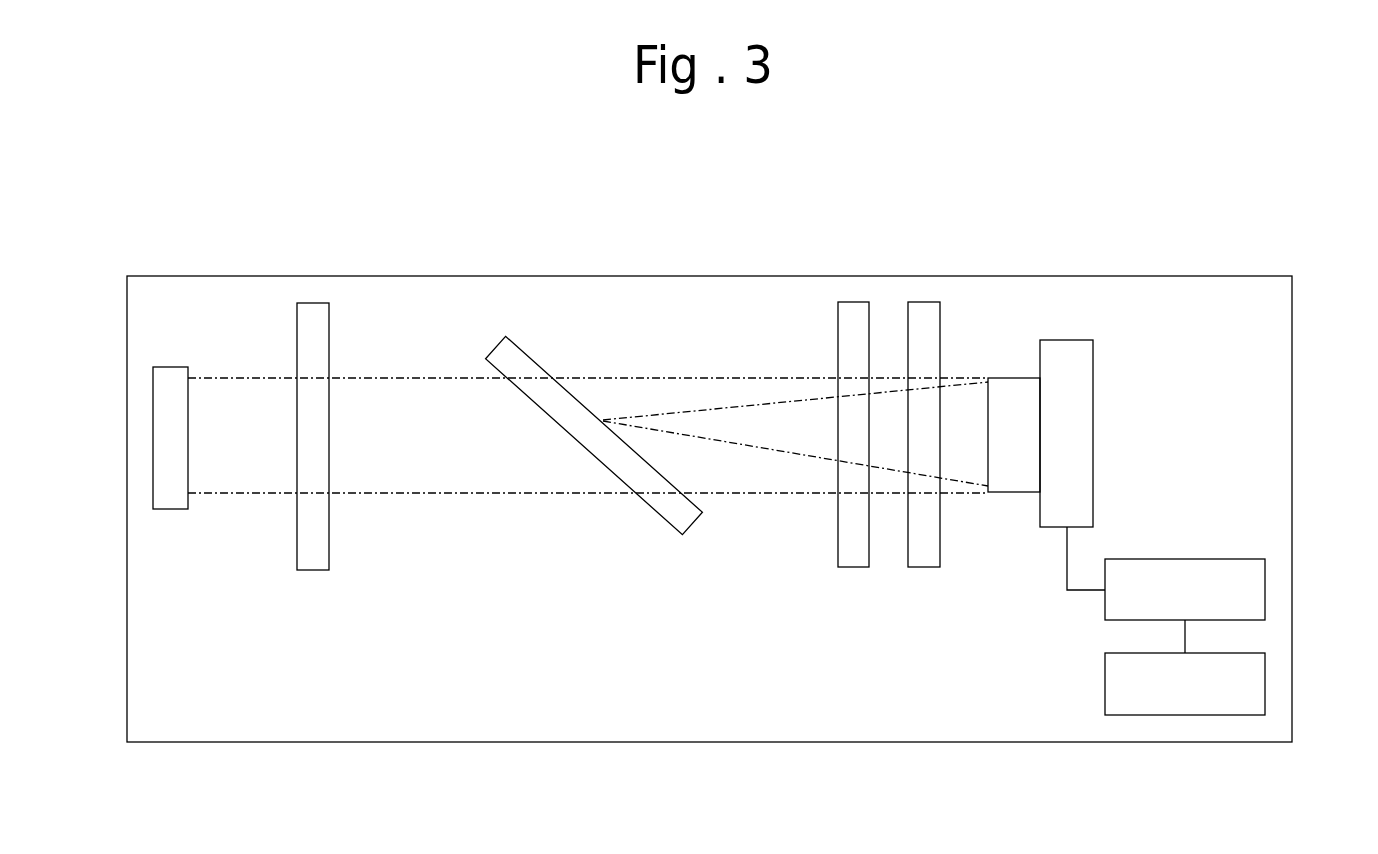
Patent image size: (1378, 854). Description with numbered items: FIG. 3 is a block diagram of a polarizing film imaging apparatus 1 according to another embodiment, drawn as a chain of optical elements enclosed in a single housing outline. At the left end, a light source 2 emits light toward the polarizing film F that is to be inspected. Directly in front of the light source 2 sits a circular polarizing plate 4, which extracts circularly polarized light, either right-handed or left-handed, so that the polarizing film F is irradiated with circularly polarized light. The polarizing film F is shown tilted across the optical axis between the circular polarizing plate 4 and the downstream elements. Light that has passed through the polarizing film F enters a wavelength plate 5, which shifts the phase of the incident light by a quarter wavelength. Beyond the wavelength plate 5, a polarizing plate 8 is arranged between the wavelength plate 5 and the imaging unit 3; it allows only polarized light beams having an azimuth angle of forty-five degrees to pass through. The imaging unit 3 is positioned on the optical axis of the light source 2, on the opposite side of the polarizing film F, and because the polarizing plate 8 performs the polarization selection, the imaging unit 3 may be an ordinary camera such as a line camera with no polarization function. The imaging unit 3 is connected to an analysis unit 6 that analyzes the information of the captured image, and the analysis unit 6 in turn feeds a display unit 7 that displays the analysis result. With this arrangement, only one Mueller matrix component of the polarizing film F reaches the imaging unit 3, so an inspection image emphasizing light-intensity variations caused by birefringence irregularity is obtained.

The imaging apparatus 1 is at (118, 273).
The light source 2 is at (168, 440).
The imaging unit 3 is at (1073, 435).
The circular polarizing plate 4 is at (312, 318).
The wavelength plate 5 is at (852, 315).
The analysis unit 6 is at (1265, 590).
The display unit 7 is at (1265, 683).
The polarizing plate 8 is at (922, 315).
The polarizing film F is at (586, 420).